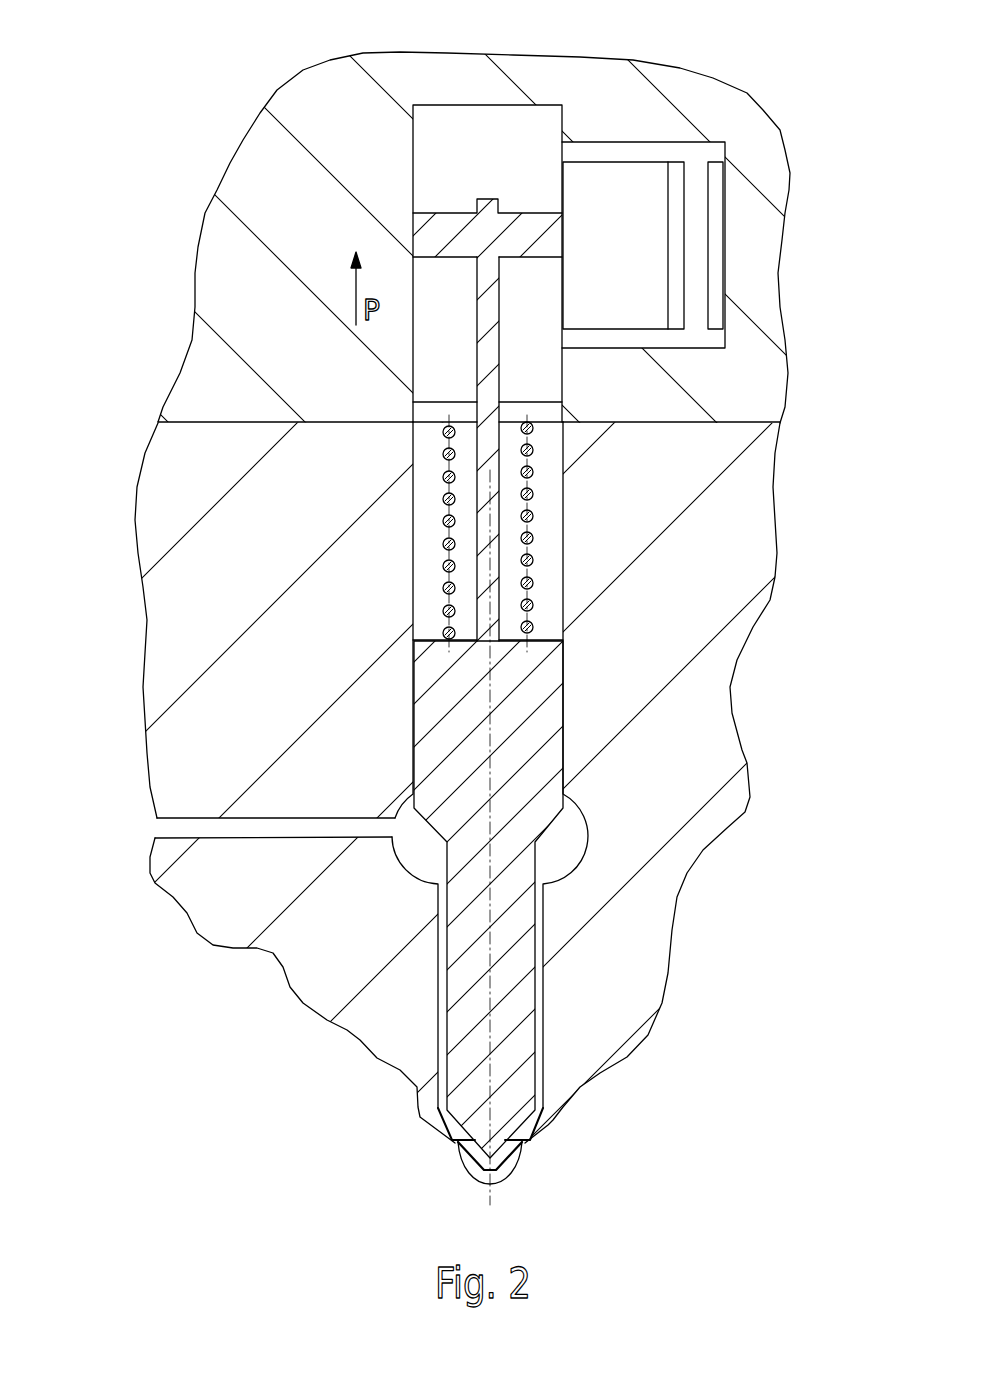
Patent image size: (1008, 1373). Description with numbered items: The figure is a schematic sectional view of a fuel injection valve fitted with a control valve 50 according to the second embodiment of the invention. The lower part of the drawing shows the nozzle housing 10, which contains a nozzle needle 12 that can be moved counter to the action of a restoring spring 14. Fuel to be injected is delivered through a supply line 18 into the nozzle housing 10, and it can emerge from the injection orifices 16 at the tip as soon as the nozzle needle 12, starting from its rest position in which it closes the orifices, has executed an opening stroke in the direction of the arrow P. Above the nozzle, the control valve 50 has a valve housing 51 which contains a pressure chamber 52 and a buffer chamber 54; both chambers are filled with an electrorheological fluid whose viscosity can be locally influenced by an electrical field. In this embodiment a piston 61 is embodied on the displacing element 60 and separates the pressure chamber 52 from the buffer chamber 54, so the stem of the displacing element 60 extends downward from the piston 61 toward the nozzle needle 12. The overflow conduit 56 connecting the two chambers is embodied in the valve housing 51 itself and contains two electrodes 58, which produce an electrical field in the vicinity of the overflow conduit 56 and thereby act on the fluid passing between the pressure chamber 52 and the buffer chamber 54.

The nozzle housing 10 is at (612, 1014).
The nozzle needle 12 is at (462, 1015).
The restoring spring 14 is at (528, 538).
The injection orifices 16 is at (452, 1148).
The supply line 18 is at (168, 828).
The control valve 50 is at (356, 140).
The valve housing 51 is at (283, 331).
The pressure chamber 52 is at (522, 133).
The buffer chamber 54 is at (545, 382).
The overflow conduit 56 is at (699, 192).
The electrodes 58 is at (718, 235).
The displacing element 60 is at (490, 363).
The piston 61 is at (442, 231).